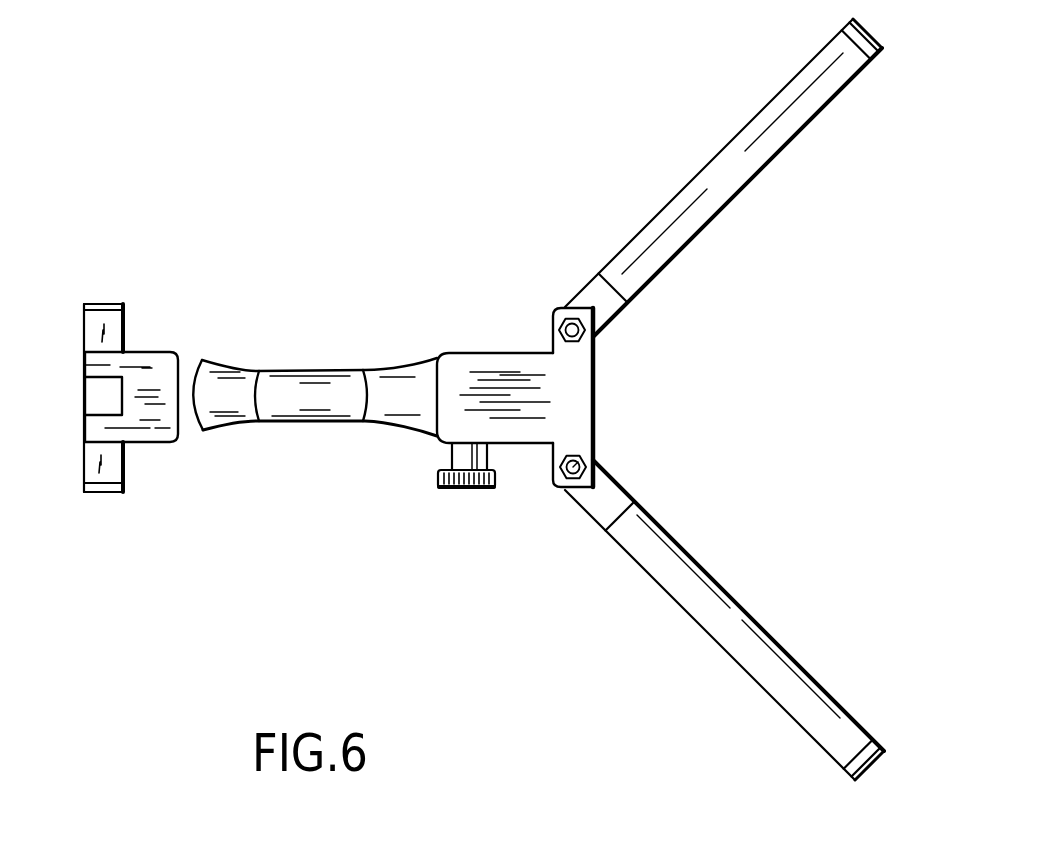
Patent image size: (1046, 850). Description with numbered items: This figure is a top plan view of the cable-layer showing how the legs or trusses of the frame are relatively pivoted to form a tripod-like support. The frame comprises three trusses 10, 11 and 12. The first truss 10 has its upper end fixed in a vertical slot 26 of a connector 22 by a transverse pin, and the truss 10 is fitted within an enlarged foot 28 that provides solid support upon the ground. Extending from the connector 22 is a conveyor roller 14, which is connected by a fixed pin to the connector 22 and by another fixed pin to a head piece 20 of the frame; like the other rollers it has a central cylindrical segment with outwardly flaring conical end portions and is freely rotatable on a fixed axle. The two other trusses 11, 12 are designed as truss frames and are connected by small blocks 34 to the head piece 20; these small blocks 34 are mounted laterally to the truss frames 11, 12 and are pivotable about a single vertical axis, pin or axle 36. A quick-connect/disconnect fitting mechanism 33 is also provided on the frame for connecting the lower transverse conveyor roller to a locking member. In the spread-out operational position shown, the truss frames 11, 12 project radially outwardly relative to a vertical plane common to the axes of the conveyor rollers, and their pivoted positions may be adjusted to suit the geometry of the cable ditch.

The truss 10 is at (98, 400).
The truss frame 11 is at (695, 173).
The truss frame 12 is at (777, 637).
The conveyor roller 14 is at (322, 362).
The head piece 20 is at (500, 382).
The connector 22 is at (152, 372).
The vertical slot 26 is at (107, 375).
The enlarged foot 28 is at (110, 330).
The quick-connect/disconnect fitting mechanism 33 is at (453, 485).
The small block 34 is at (595, 447).
The pin or axle 36 is at (572, 472).